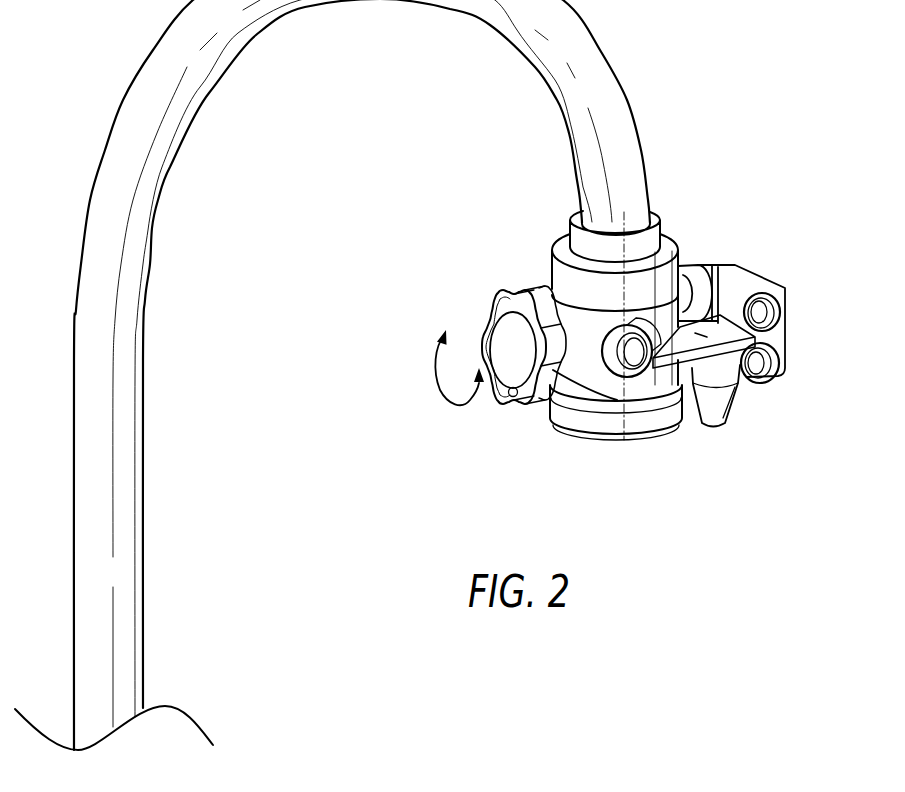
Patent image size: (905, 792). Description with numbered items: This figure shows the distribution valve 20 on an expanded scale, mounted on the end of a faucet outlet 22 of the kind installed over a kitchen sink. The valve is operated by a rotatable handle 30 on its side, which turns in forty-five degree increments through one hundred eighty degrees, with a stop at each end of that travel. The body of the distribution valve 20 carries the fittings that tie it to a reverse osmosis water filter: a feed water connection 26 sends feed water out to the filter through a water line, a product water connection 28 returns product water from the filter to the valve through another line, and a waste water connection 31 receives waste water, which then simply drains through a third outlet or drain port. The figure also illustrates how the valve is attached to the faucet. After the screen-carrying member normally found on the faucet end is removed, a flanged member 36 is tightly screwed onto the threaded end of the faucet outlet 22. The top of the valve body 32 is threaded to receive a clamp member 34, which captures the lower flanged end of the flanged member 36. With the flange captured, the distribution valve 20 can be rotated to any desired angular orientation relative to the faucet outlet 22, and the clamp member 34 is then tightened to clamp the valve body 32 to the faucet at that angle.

The distribution valve 20 is at (550, 448).
The faucet outlet 22 is at (646, 171).
The feed water connection 26 is at (777, 311).
The product water connection 28 is at (592, 310).
The rotatable handle 30 is at (497, 307).
The waste water connection 31 is at (776, 362).
The valve body 32 is at (662, 335).
The clamp member 34 is at (569, 278).
The flanged member 36 is at (652, 243).